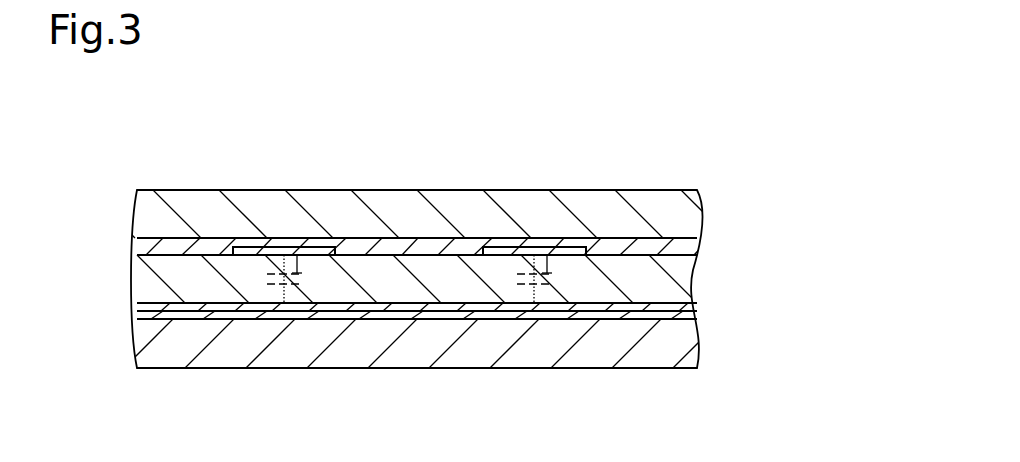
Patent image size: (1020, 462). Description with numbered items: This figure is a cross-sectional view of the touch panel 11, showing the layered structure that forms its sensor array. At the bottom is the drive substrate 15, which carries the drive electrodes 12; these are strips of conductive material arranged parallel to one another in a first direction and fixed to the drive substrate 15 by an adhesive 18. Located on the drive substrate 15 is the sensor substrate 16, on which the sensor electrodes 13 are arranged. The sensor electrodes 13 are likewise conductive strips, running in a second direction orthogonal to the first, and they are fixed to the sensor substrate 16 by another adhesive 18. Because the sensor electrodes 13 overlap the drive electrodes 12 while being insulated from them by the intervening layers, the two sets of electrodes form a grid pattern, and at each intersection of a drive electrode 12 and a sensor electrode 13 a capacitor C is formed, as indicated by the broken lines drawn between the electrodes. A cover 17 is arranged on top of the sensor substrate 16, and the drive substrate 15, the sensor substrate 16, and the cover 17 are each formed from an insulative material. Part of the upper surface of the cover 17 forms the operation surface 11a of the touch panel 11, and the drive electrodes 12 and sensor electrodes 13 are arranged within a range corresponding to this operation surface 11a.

The touch panel 11 is at (691, 142).
The operation surface 11a is at (678, 181).
The drive electrodes 12 is at (388, 316).
The sensor electrodes 13 is at (282, 249).
The drive substrate 15 is at (143, 331).
The sensor substrate 16 is at (134, 280).
The cover 17 is at (144, 215).
The adhesives 18 is at (692, 246).
The capacitors C is at (300, 247).